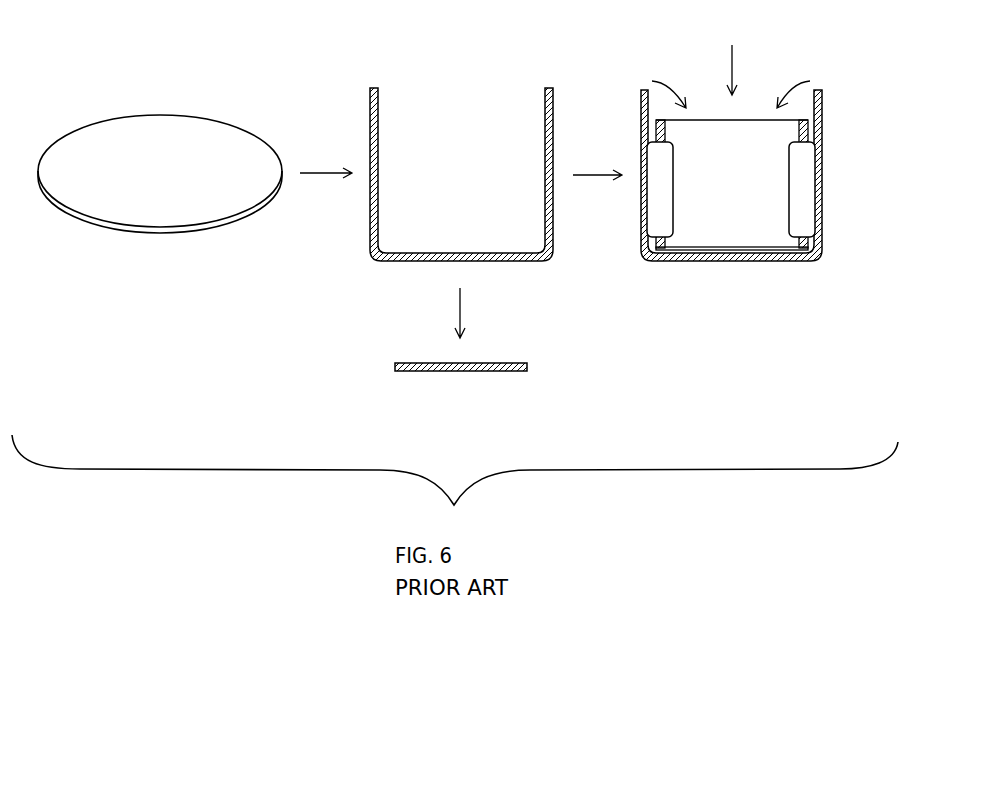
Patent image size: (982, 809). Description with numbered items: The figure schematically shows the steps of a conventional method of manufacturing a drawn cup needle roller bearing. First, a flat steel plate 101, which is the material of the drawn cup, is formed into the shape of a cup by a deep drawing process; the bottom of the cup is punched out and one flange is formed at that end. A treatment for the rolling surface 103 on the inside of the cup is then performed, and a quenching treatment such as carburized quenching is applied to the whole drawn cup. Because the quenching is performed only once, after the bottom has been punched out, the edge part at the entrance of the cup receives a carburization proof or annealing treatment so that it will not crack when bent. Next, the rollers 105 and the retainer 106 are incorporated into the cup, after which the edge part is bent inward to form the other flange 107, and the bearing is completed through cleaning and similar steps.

The flat steel plate 101 is at (160, 137).
The rolling surface 103 is at (378, 157).
The rollers 105 is at (803, 190).
The retainer 106 is at (800, 248).
The flange 107 is at (822, 121).